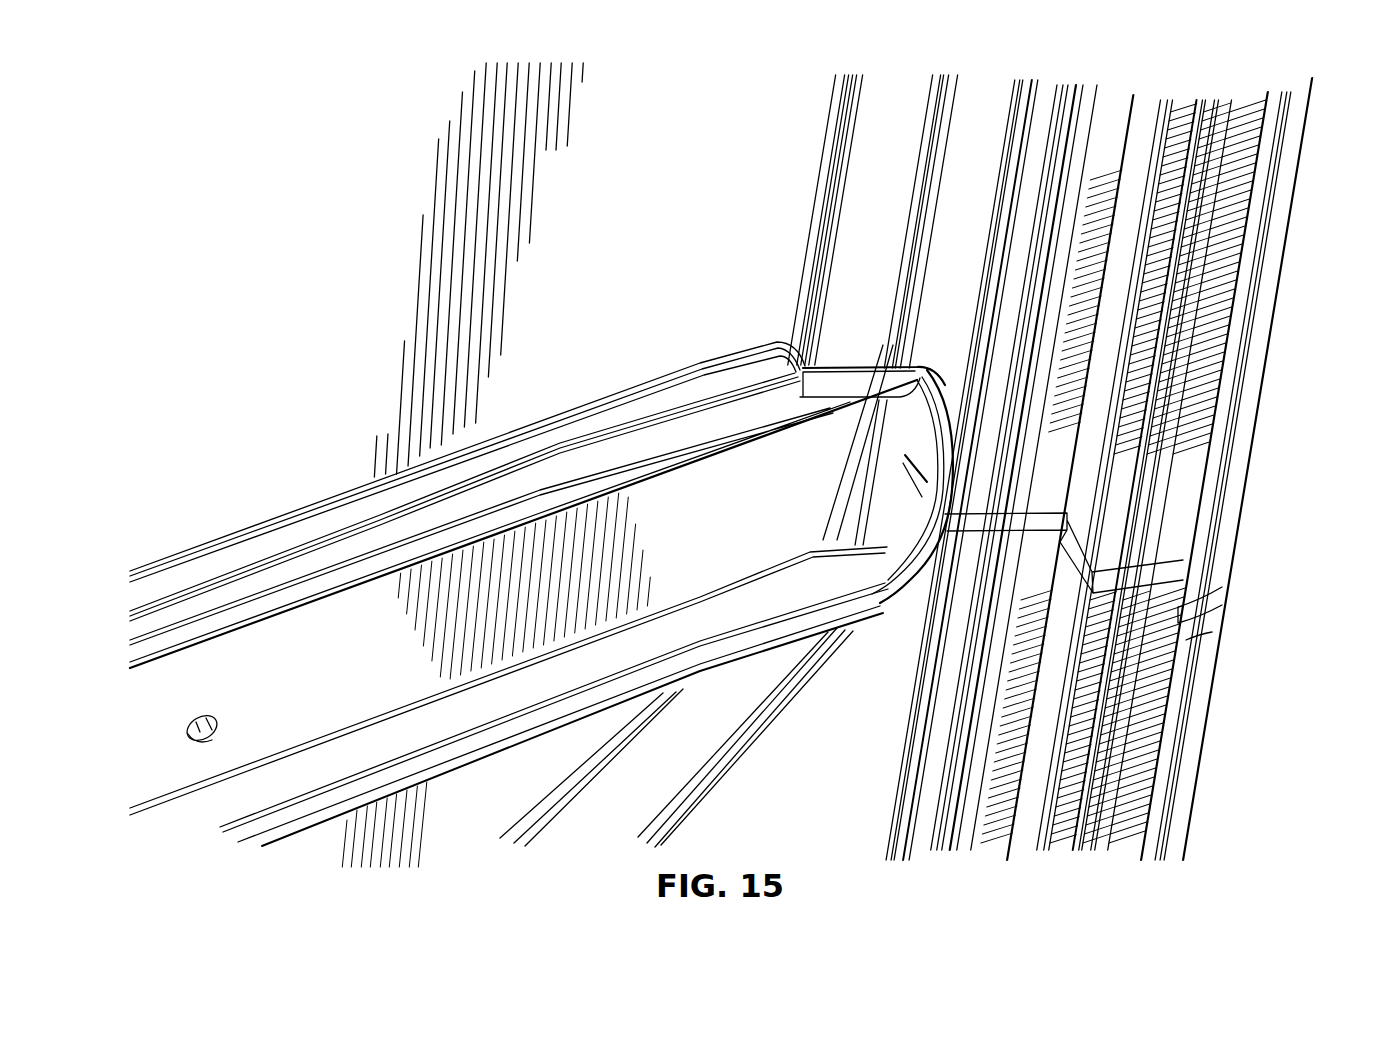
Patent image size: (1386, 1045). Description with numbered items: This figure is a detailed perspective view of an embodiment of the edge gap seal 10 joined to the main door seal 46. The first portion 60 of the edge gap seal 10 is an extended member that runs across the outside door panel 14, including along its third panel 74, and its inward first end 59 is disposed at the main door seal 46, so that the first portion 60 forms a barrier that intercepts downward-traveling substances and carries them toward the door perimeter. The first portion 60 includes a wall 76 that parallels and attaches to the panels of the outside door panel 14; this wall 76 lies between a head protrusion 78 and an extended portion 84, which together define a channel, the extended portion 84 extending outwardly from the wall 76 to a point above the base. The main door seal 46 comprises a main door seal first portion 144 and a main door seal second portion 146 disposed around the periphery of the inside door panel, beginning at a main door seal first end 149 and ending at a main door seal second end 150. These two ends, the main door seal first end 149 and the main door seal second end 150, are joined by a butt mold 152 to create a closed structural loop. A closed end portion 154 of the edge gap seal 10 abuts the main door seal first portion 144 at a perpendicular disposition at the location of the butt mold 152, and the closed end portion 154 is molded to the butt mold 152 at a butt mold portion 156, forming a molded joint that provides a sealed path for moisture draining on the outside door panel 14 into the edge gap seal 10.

The edge gap seal 10 is at (330, 502).
The outside door panel 14 is at (630, 258).
The main door seal 46 is at (1290, 195).
The first end 59 is at (822, 380).
The first portion 60 is at (540, 418).
The third panel 74 is at (810, 778).
The wall 76 is at (348, 653).
The head protrusion 78 is at (572, 490).
The extended portion 84 is at (437, 732).
The main door seal first portion 144 is at (958, 162).
The main door seal second portion 146 is at (1213, 290).
The main door seal first end 149 is at (1225, 555).
The main door seal second end 150 is at (1198, 642).
The butt mold 152 is at (1213, 604).
The closed end portion 154 is at (865, 497).
The butt mold portion 156 is at (905, 478).